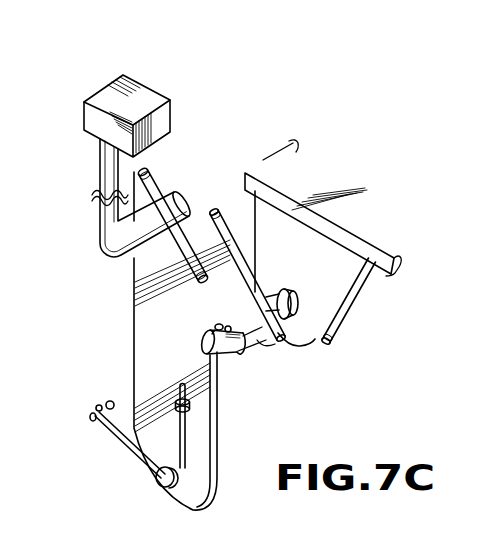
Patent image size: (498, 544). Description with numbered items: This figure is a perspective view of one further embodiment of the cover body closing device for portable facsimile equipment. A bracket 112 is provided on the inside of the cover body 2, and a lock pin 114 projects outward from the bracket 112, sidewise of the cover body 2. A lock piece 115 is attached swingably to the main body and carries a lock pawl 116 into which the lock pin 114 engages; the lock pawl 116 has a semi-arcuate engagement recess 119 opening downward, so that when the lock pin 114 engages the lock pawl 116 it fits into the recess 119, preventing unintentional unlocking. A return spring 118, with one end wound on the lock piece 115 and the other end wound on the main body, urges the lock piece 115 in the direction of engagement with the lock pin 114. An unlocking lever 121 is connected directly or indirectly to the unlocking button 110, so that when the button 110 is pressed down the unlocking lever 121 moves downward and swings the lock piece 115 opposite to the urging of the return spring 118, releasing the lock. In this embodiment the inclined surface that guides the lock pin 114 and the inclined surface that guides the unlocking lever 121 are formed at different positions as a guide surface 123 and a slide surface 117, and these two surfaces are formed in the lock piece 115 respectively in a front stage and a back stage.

The cover body 2 is at (268, 165).
The unlocking button 110 is at (149, 103).
The bracket 112 is at (323, 297).
The lock pin 114 is at (230, 353).
The lock piece 115 is at (138, 323).
The lock pawl 116 is at (273, 348).
The slide surface 117 is at (198, 221).
The return spring 118 is at (138, 455).
The engagement recess 119 is at (227, 324).
The unlocking lever 121 is at (177, 192).
The guide surface 123 is at (249, 266).